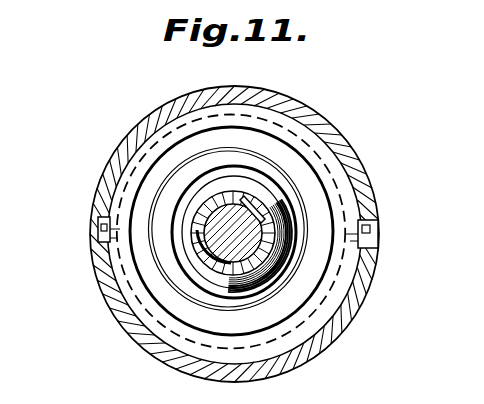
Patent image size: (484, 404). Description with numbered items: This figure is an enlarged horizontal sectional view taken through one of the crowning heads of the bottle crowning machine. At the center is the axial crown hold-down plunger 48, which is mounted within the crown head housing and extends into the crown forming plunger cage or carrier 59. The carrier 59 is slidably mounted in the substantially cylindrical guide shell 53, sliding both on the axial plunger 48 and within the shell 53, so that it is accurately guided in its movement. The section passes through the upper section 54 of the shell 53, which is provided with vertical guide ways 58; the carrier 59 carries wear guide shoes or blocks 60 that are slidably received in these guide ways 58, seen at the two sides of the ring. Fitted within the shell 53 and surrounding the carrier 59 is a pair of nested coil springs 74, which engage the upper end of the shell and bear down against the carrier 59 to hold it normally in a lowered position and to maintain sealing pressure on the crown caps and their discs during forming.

The crown hold-down plunger 48 is at (244, 205).
The guide shell 53 is at (372, 177).
The upper section of the shell 54 is at (375, 200).
The vertical guide ways 58 is at (98, 219).
The crown forming plunger cage or carrier 59 is at (339, 285).
The wear guide shoes or blocks 60 is at (98, 238).
The nested coil springs 74 is at (292, 181).